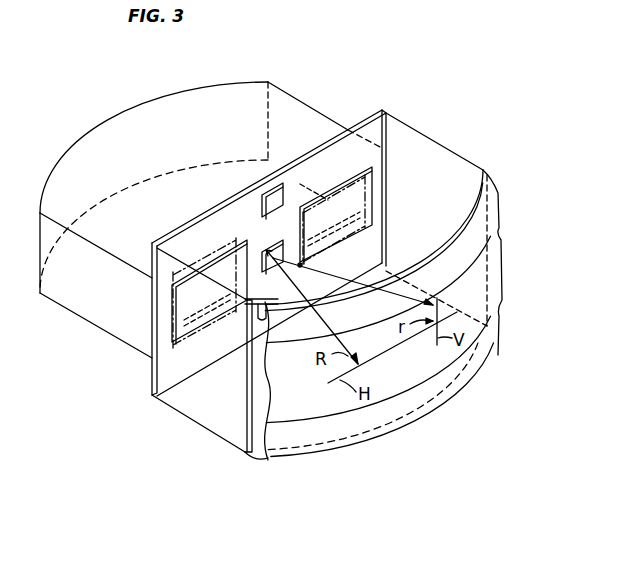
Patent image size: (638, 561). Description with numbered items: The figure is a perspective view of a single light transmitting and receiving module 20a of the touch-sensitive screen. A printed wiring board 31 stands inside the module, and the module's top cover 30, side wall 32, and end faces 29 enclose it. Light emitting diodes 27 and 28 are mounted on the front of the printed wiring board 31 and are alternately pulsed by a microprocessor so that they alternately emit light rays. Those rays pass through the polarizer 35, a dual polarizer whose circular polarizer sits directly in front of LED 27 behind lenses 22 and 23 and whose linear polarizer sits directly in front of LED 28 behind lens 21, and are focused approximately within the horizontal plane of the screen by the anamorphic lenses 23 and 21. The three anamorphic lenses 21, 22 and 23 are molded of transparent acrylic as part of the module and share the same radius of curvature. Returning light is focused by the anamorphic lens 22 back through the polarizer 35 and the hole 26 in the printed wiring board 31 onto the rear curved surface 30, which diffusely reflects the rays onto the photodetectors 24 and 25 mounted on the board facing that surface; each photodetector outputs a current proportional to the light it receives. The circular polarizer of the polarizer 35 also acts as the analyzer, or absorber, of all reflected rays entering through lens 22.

The module 20a is at (347, 503).
The anamorphic lens 21 is at (500, 318).
The anamorphic lens 22 is at (503, 251).
The anamorphic lens 23 is at (500, 193).
The photodetector 24 is at (230, 266).
The photodetector 25 is at (366, 178).
The hole 26 is at (270, 254).
The light emitting diode 27 is at (288, 196).
The light emitting diode 28 is at (274, 299).
The side plate 29 is at (422, 150).
The rear curved surface 30 is at (242, 92).
The printed wiring board 31 is at (164, 382).
The side wall 32 is at (82, 310).
The polarizer 35 is at (486, 168).